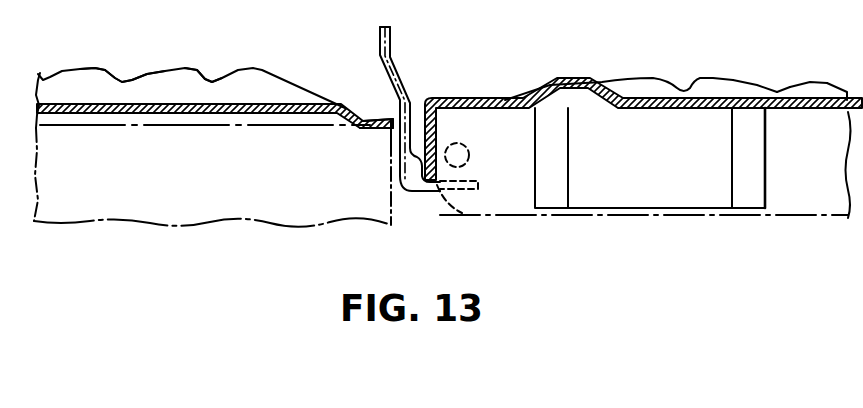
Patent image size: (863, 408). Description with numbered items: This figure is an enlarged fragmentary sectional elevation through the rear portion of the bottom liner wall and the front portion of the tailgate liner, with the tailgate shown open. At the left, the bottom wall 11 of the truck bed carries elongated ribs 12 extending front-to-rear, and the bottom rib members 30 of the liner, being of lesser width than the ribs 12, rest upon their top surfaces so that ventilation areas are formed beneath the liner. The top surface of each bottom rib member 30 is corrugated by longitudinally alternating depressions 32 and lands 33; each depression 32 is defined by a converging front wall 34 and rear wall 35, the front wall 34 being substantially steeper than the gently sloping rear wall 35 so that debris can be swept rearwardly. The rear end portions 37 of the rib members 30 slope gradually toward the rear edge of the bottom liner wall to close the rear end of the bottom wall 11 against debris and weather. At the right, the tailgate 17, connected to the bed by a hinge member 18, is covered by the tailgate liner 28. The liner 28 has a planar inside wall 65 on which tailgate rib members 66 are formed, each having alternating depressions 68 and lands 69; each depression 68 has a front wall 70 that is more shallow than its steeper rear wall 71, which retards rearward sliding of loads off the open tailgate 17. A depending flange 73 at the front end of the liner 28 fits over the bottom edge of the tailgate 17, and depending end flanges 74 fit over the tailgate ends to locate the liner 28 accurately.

The bottom wall 11 is at (117, 133).
The ribs 12 is at (218, 120).
The tailgate 17 is at (498, 213).
The hinge member 18 is at (469, 152).
The tailgate liner 28 is at (398, 47).
The bottom rib members 30 is at (252, 92).
The depressions 32 is at (206, 78).
The lands 33 is at (100, 70).
The front wall 34 is at (118, 75).
The rear wall 35 is at (153, 73).
The rear end portions 37 is at (300, 82).
The inside wall 65 is at (500, 98).
The tailgate rib members 66 is at (823, 92).
The depressions 68 is at (783, 88).
The lands 69 is at (813, 80).
The front wall 70 is at (713, 78).
The rear wall 71 is at (733, 80).
The depending flange 73 is at (425, 143).
The depending end flanges 74 is at (695, 177).